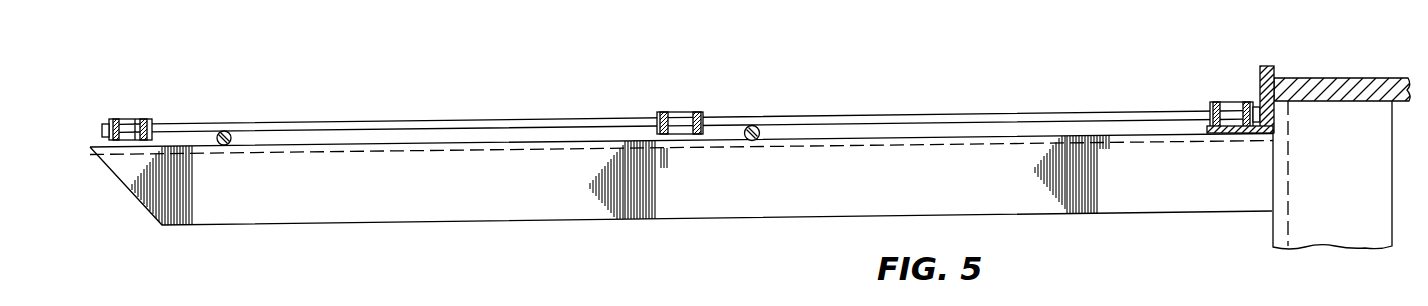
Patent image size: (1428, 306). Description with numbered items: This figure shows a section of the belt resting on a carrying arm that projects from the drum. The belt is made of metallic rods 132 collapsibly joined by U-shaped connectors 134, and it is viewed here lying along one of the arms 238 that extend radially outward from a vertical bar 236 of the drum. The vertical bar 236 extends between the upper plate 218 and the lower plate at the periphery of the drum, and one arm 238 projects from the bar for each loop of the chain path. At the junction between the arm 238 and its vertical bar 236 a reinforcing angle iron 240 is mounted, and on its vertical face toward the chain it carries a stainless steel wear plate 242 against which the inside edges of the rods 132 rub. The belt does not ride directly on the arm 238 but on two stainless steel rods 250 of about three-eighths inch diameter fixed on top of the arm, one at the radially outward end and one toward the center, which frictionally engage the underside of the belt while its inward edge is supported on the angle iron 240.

The rods 132 is at (480, 122).
The U-shaped connectors 134 is at (151, 117).
The upper plate 218 is at (1345, 83).
The vertical bar 236 is at (1300, 227).
The arm 238 is at (515, 212).
The reinforcing angle iron 240 is at (1267, 128).
The reinforcing stainless steel wear plate 242 is at (1260, 73).
The stainless steel rods 250 is at (218, 145).